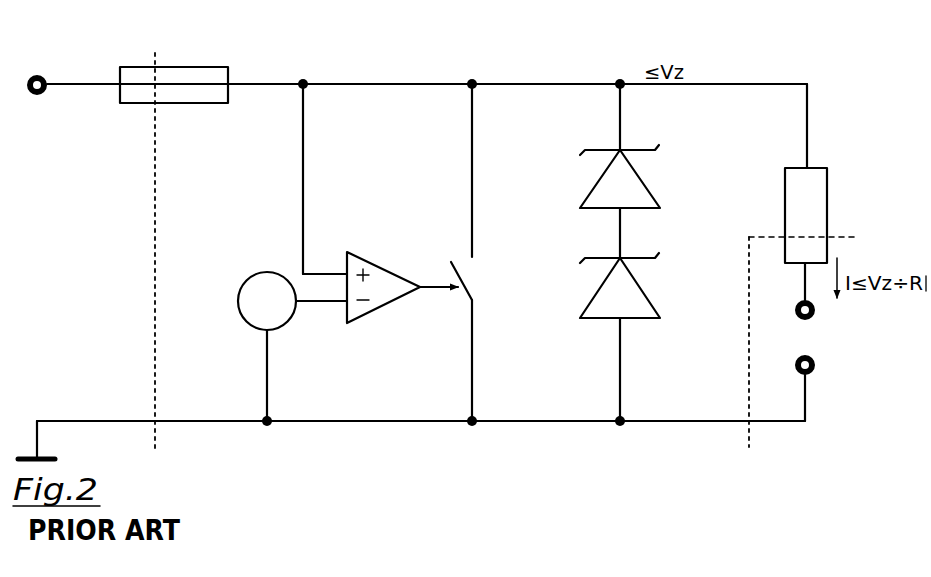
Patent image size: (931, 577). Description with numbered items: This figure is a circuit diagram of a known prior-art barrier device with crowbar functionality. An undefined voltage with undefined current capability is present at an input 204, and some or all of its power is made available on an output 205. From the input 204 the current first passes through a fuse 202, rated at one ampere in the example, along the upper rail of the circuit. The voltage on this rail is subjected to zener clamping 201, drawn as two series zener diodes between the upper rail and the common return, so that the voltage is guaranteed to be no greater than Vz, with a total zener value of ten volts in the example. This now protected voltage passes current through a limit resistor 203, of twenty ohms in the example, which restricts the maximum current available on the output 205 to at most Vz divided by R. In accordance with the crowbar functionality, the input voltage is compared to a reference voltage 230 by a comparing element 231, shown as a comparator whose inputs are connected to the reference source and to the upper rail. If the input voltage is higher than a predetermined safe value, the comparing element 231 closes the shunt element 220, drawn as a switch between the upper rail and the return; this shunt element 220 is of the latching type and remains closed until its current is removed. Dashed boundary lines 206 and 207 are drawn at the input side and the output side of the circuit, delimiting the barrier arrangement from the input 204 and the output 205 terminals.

The zener clamping 201 is at (582, 213).
The fuse 202 is at (190, 109).
The limit resistor 203 is at (782, 190).
The input 204 is at (37, 103).
The output 205 is at (805, 337).
The boundary line 206 is at (159, 373).
The boundary line 207 is at (746, 369).
The shunt element 220 is at (467, 291).
The reference voltage 230 is at (238, 283).
The comparing element 231 is at (386, 265).